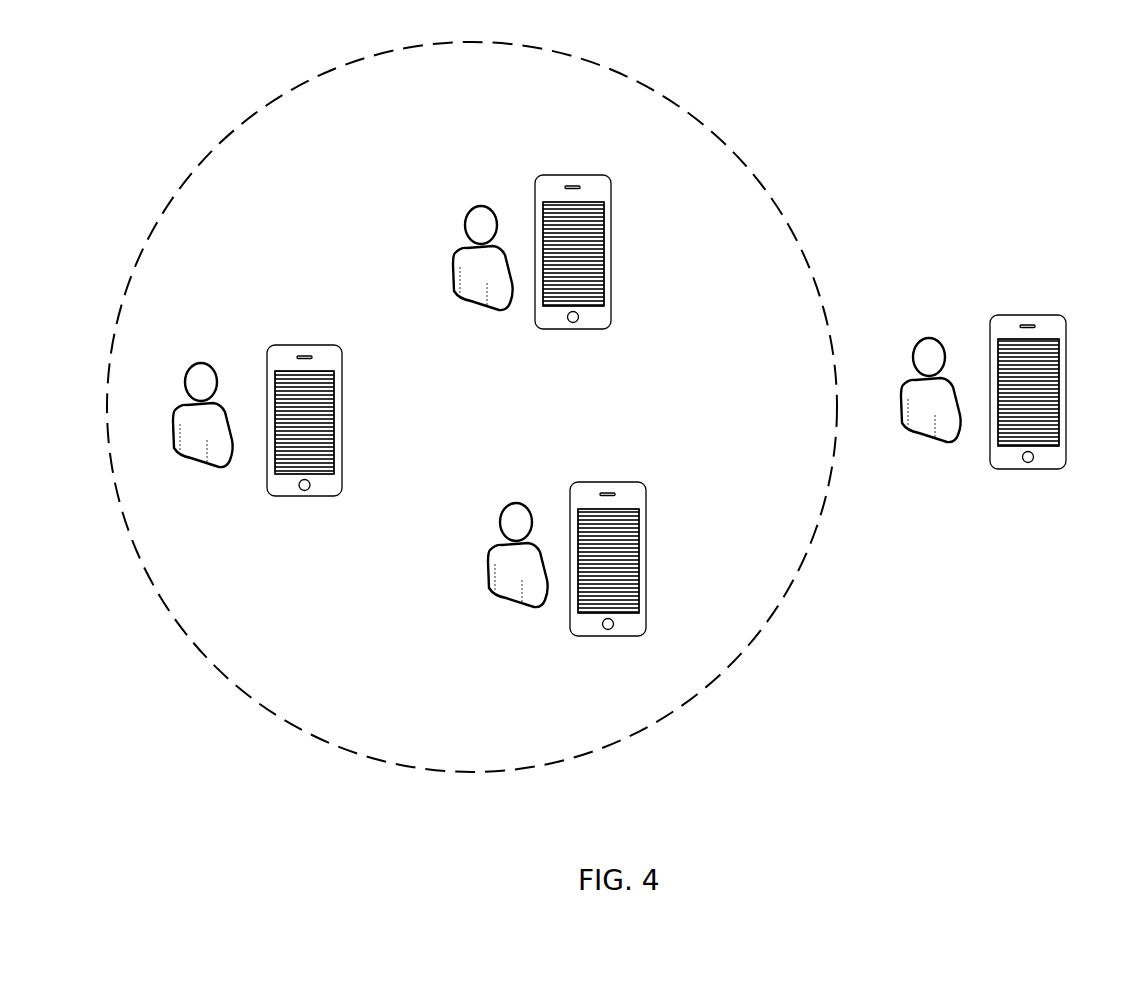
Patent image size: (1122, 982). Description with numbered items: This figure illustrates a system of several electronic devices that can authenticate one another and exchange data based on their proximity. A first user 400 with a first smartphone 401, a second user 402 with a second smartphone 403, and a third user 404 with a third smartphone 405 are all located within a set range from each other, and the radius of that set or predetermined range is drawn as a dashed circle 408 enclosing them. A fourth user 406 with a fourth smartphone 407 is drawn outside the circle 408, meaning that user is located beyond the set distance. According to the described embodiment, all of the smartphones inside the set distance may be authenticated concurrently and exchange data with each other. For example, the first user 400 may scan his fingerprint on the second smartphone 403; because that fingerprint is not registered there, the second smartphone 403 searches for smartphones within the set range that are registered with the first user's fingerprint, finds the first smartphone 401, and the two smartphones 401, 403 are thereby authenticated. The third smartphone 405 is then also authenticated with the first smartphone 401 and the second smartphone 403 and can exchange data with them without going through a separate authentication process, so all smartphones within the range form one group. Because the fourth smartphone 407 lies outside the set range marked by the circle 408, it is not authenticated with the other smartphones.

The first user 400 is at (203, 429).
The first smartphone 401 is at (304, 433).
The second user 402 is at (483, 271).
The second smartphone 403 is at (573, 264).
The third user 404 is at (518, 570).
The third smartphone 405 is at (608, 569).
The fourth user 406 is at (931, 406).
The fourth smartphone 407 is at (1028, 403).
The circle 408 is at (197, 167).